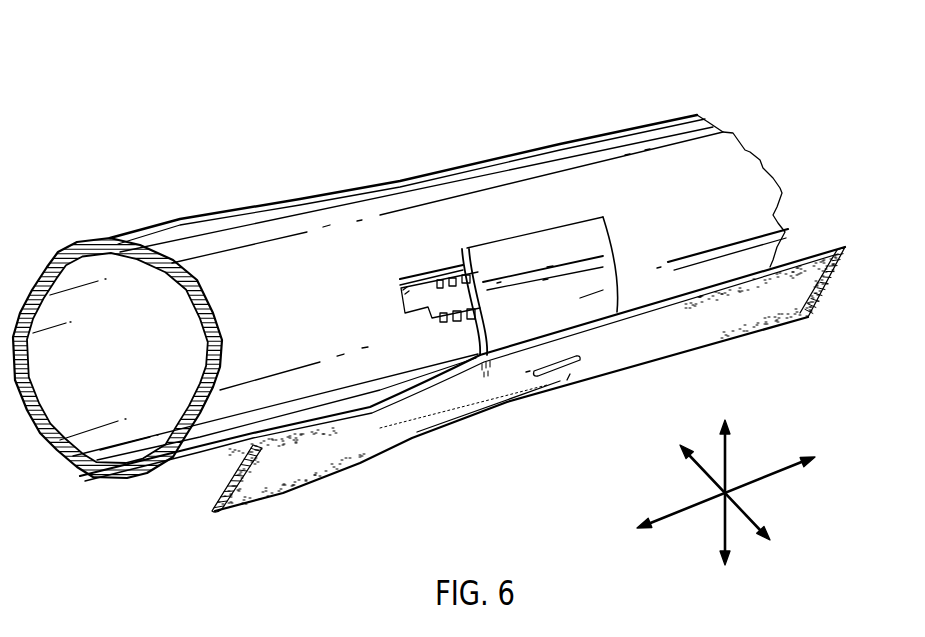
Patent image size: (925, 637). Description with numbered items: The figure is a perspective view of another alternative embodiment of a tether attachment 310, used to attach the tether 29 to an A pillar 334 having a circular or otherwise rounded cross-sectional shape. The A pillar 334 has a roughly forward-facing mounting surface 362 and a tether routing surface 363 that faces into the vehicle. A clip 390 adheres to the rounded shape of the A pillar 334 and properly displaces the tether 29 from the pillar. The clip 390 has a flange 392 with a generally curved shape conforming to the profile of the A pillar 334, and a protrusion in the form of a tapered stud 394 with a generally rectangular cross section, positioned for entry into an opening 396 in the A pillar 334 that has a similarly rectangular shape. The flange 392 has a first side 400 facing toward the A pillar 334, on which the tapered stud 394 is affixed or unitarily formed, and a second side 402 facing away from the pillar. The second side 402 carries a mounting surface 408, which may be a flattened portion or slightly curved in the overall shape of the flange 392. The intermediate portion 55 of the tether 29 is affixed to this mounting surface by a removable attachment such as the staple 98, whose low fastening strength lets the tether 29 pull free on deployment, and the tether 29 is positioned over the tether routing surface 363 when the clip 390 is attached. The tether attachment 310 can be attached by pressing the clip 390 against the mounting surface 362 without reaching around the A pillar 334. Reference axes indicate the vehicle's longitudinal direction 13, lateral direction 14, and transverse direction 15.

The A pillar 334 is at (283, 196).
The tether routing surface 363 is at (215, 243).
The mounting surface 362 is at (542, 216).
The tether attachment 310 is at (592, 198).
The clip 390 is at (481, 219).
The flange 392 is at (593, 243).
The second side 402 is at (567, 308).
The mounting surface 408 is at (640, 280).
The first side 400 is at (424, 270).
The opening 396 is at (414, 285).
The tapered stud 394 is at (452, 322).
The intermediate portion 55 is at (600, 356).
The tether 29 is at (280, 499).
The staple 98 is at (568, 380).
The transverse direction 15 is at (727, 462).
The lateral direction 14 is at (700, 468).
The longitudinal direction 13 is at (773, 477).